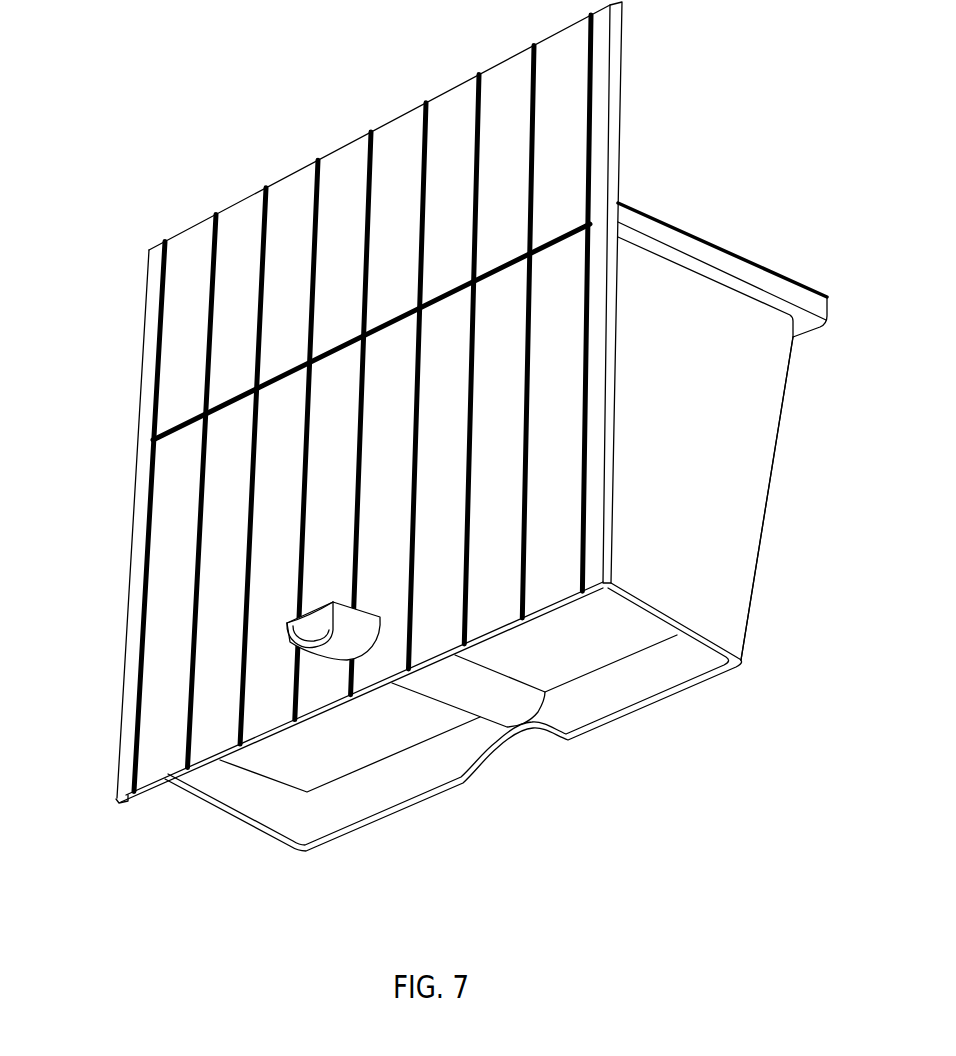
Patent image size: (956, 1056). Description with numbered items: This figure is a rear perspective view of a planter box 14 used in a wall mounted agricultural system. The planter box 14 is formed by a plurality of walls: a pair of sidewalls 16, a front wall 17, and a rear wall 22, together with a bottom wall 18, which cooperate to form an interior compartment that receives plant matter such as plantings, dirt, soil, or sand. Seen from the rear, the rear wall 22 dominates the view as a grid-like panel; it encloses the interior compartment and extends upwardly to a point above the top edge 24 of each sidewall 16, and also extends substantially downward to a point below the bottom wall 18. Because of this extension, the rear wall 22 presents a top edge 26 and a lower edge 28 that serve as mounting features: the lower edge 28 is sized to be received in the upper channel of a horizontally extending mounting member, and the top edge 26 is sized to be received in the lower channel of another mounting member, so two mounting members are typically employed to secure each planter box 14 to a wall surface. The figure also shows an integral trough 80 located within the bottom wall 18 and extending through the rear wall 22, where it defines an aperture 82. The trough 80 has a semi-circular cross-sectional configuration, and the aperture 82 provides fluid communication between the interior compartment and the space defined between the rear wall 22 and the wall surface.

The planter box 14 is at (712, 93).
The sidewall 16 is at (683, 420).
The front wall 17 is at (770, 503).
The bottom wall 18 is at (575, 665).
The rear wall 22 is at (620, 128).
The top edge 24 is at (733, 252).
The top edge 26 is at (292, 173).
The lower edge 28 is at (124, 803).
The trough 80 is at (331, 648).
The aperture 82 is at (317, 622).